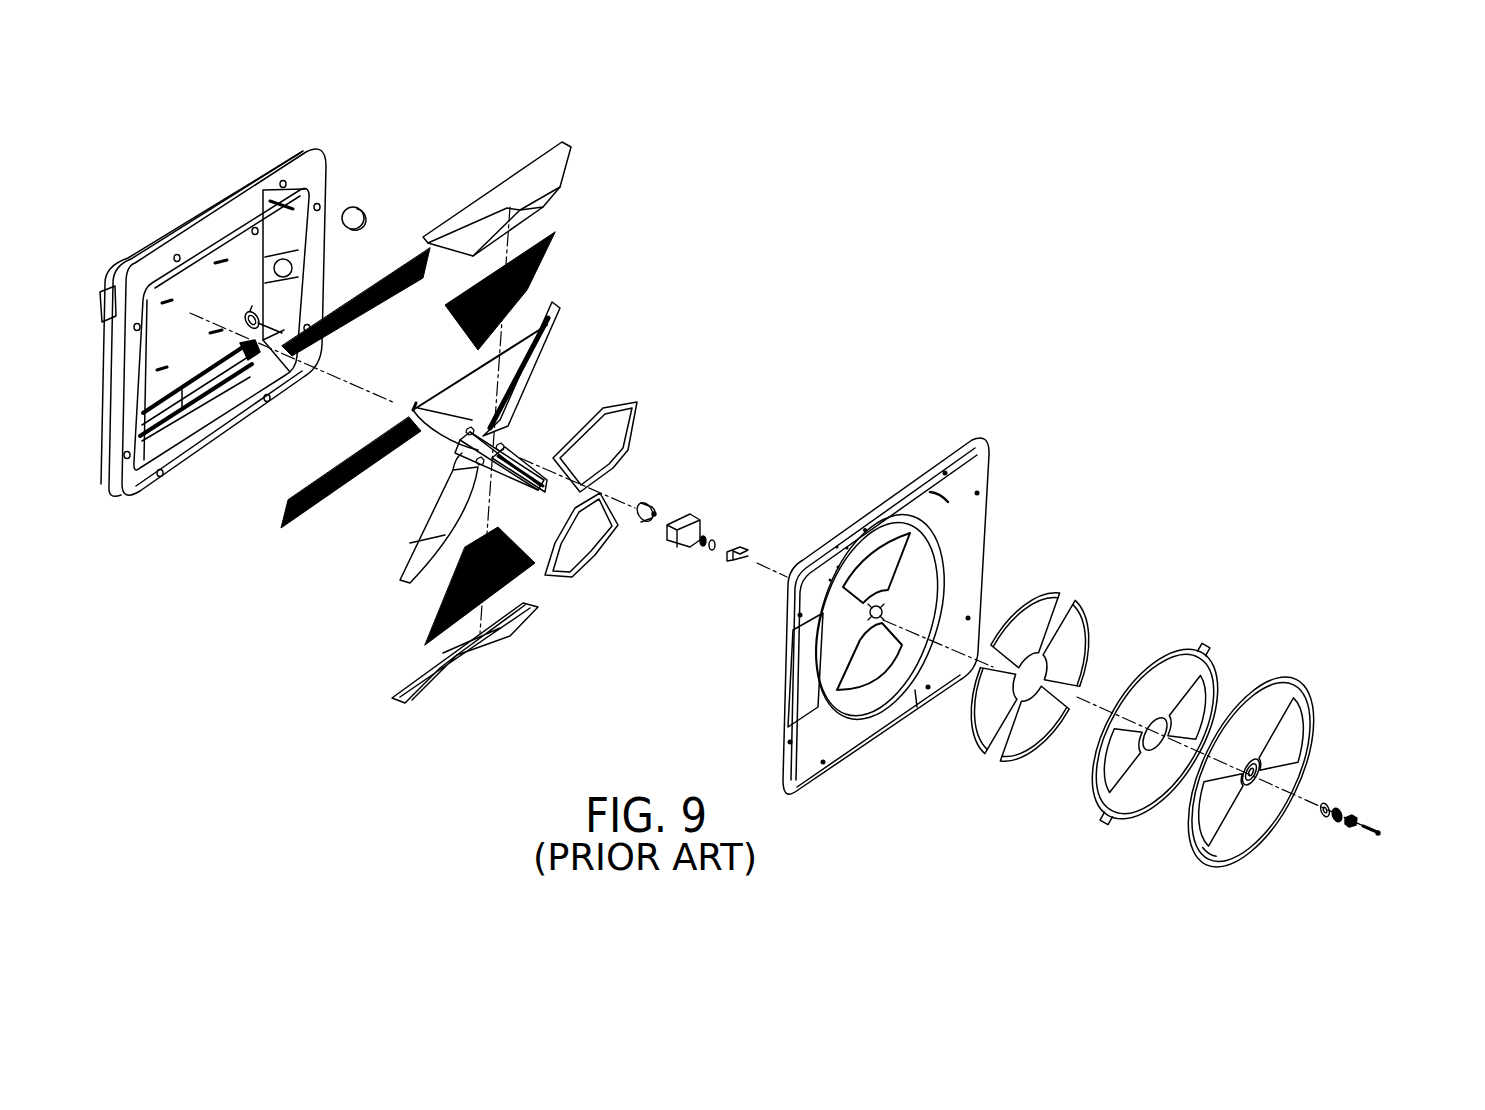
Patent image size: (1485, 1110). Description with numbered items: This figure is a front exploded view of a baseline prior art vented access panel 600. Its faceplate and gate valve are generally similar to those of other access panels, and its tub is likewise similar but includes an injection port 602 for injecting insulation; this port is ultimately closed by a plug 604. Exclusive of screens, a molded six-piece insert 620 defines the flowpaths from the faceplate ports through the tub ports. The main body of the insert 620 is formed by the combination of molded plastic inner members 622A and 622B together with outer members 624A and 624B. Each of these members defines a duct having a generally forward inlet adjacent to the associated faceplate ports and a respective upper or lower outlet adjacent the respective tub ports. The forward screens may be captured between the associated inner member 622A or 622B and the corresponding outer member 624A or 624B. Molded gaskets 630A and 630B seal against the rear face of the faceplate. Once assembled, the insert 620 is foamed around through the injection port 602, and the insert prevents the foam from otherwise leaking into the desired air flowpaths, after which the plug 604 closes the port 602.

The vented access panel 600 is at (1468, 618).
The injection port 602 is at (266, 272).
The plug 604 is at (364, 205).
The molded six-piece insert 620 is at (480, 705).
The inner member 622A is at (544, 386).
The inner member 622B is at (416, 515).
The outer member 624A is at (485, 189).
The outer member 624B is at (481, 671).
The molded gasket 630A is at (640, 432).
The molded gasket 630B is at (615, 555).